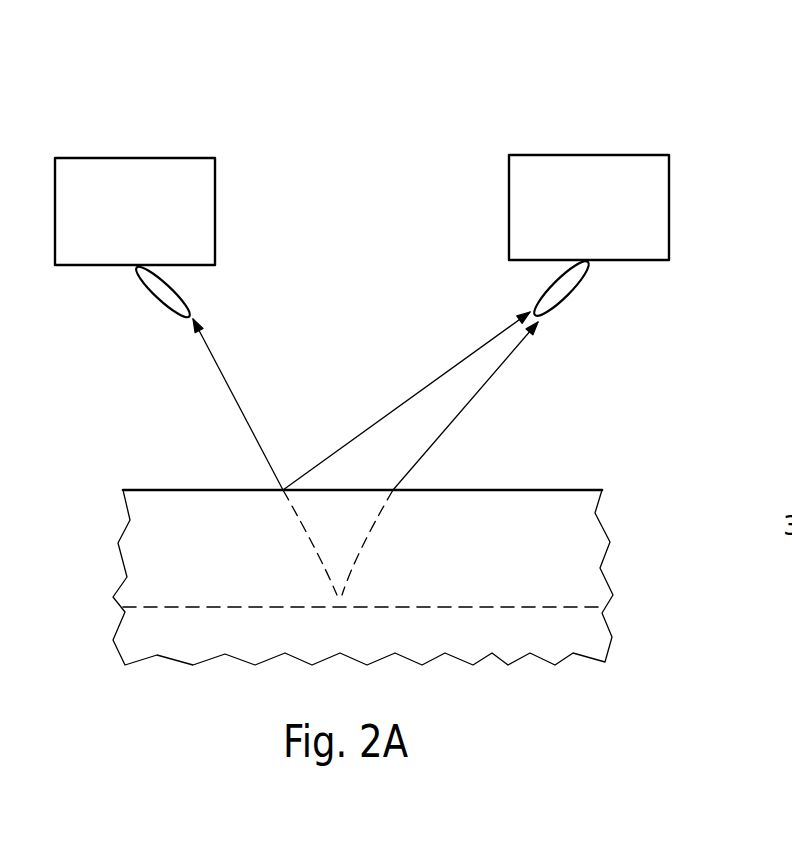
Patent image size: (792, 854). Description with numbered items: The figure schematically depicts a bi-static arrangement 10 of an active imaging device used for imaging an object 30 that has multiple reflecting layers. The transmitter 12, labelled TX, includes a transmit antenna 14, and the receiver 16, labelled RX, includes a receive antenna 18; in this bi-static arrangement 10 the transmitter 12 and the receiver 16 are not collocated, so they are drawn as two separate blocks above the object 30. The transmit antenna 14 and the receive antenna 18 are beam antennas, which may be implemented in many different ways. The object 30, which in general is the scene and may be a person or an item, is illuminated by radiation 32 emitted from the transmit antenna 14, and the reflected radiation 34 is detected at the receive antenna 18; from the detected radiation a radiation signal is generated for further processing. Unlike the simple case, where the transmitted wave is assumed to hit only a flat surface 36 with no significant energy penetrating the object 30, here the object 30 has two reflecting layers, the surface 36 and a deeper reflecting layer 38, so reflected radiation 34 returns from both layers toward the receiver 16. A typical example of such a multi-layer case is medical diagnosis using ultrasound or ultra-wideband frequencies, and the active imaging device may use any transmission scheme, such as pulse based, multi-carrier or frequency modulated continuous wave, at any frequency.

The bi-static arrangement 10 is at (603, 108).
The transmitter 12 is at (215, 208).
The transmit antenna 14 is at (172, 283).
The receiver 16 is at (669, 205).
The receive antenna 18 is at (580, 285).
The object 30 is at (520, 507).
The radiation 32 is at (227, 382).
The reflected radiation 34 is at (403, 401).
The surface 36 is at (203, 490).
The reflecting layer 38 is at (142, 607).